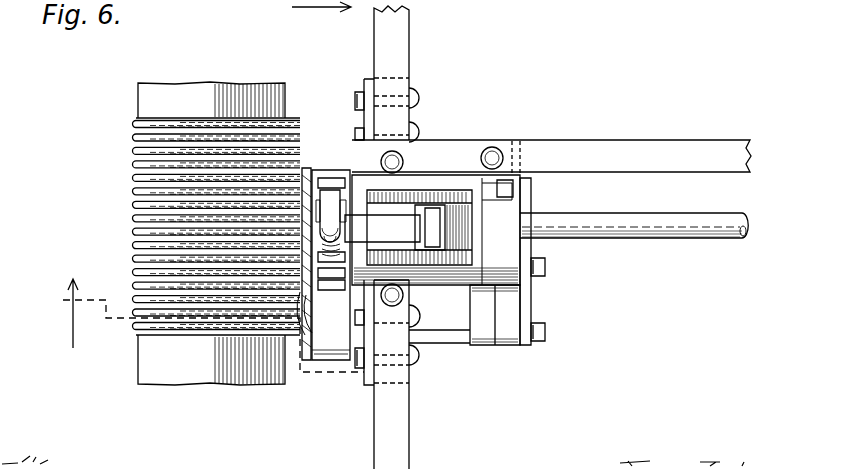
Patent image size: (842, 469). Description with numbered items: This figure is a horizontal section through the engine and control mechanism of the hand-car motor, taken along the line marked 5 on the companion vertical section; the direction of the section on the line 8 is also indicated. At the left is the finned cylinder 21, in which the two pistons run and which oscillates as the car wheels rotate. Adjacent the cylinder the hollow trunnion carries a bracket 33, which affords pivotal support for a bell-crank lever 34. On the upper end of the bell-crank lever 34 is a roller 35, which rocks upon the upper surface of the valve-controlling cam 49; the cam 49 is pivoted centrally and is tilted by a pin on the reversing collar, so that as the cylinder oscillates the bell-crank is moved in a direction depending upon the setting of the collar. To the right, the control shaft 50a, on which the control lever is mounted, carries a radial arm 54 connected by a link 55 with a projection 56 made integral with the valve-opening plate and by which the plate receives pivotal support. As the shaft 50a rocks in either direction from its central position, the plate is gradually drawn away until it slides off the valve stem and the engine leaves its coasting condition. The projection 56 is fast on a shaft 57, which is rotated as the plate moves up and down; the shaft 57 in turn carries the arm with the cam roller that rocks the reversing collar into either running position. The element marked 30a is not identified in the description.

The cylinder 21 is at (132, 219).
The section line 5 is at (205, 325).
The section line 8 is at (321, 16).
The slide bar 30a is at (328, 212).
The bracket 33 is at (426, 248).
The bell-crank lever 34 is at (391, 232).
The roller 35 is at (331, 224).
The valve-controlling cam 49 is at (336, 255).
The shaft 50a is at (634, 215).
The radial arm 54 is at (531, 255).
The link 55 is at (532, 283).
The projection 56 is at (523, 306).
The shaft 57 is at (446, 344).